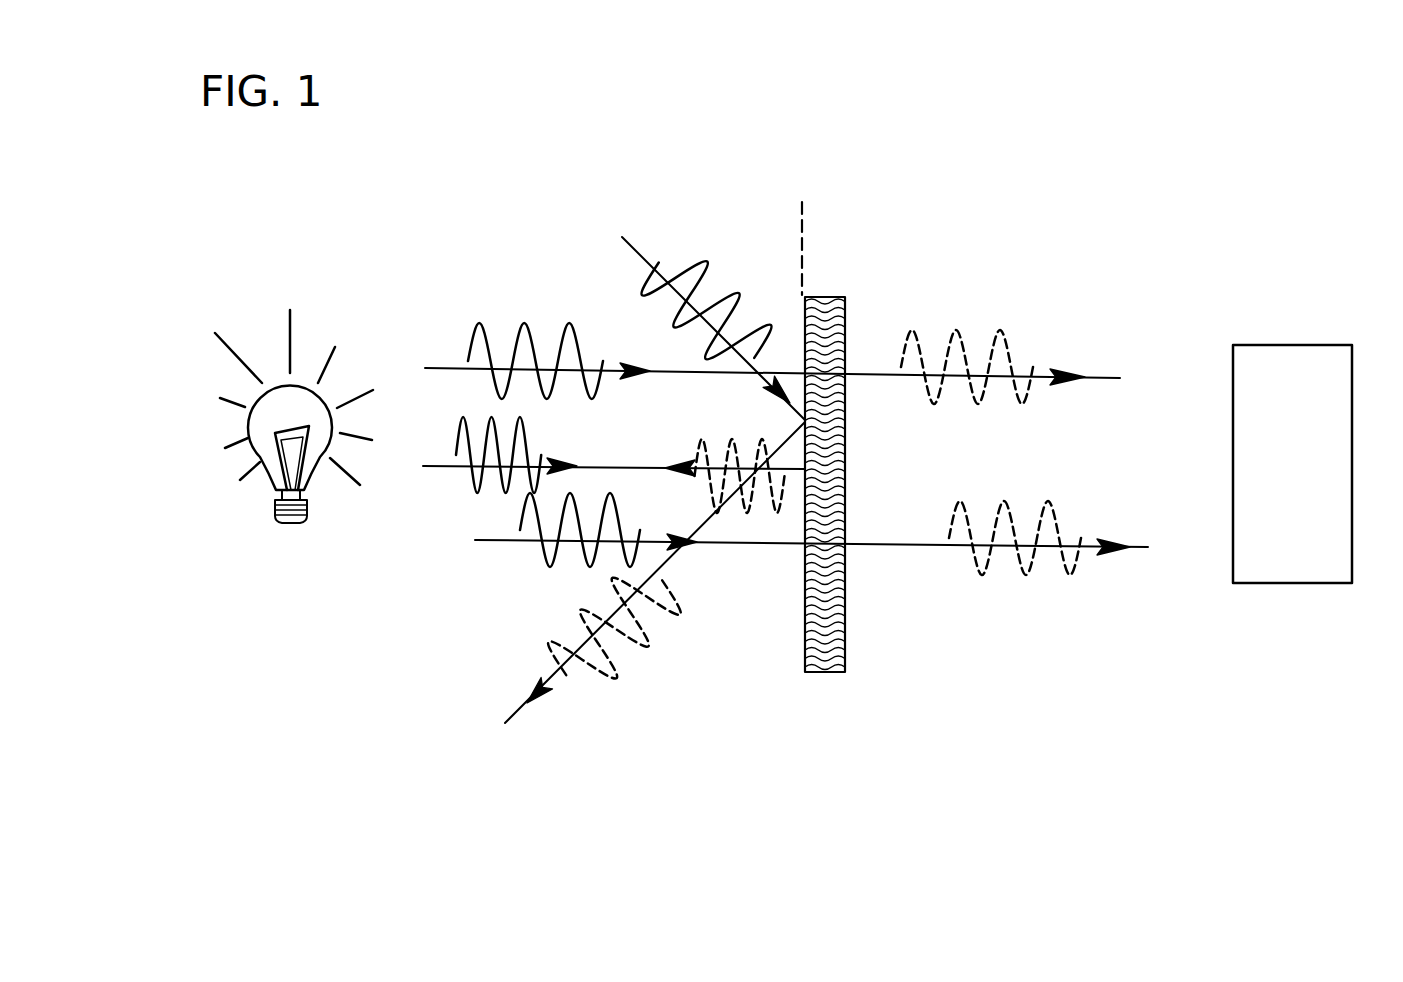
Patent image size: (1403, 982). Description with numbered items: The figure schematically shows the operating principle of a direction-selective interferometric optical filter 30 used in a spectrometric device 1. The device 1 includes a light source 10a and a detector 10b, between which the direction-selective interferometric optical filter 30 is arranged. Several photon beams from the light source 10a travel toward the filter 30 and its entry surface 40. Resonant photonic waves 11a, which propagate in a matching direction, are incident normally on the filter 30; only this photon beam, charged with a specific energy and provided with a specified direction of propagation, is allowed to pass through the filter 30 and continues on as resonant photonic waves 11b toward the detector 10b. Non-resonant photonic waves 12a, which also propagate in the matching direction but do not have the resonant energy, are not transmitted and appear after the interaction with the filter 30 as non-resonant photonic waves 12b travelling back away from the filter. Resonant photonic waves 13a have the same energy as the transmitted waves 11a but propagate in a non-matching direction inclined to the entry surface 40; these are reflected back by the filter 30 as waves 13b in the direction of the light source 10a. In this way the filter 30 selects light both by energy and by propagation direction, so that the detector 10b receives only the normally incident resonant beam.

The spectrometric device 1 is at (1056, 189).
The light source 10a is at (313, 483).
The detector 10b is at (1328, 385).
The resonant photonic waves in a matching propagation direction before interaction 11a is at (477, 318).
The resonant photonic waves in a matching propagation direction after interaction 11b is at (1007, 330).
The non-resonant photonic waves in a matching propagation direction before interacti 12a is at (500, 497).
The non-resonant photonic waves in a matching propagation direction after interactio 12b is at (723, 440).
The resonant photonic waves in a non-matching propagation direction before interacti 13a is at (680, 243).
The resonant photonic waves in a non-matching propagation direction after interactio 13b is at (652, 653).
The direction-selective interferometric optical filter 30 is at (828, 292).
The entry surface 40 is at (802, 232).